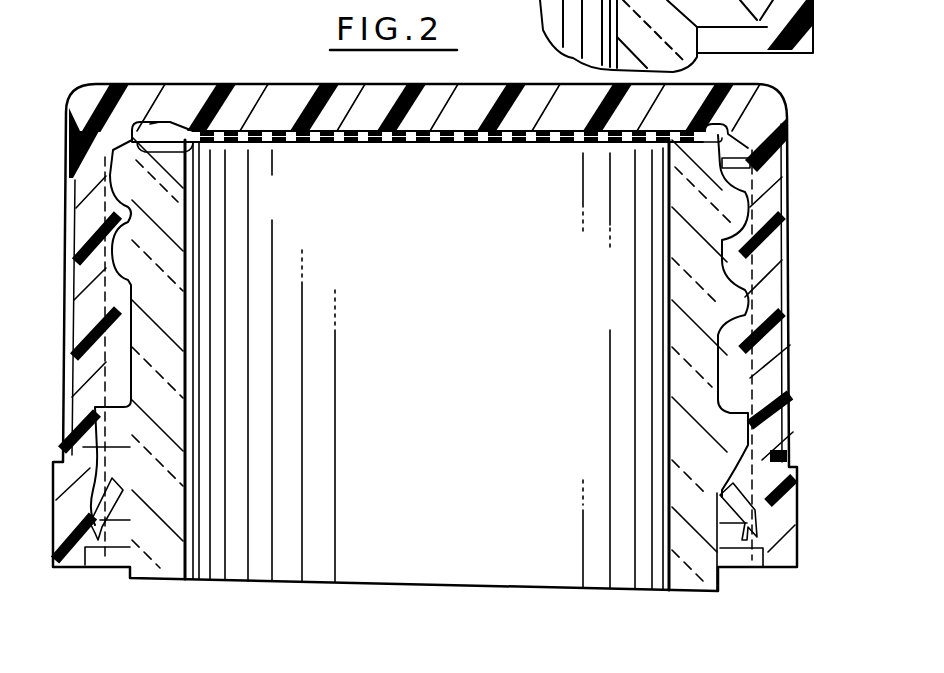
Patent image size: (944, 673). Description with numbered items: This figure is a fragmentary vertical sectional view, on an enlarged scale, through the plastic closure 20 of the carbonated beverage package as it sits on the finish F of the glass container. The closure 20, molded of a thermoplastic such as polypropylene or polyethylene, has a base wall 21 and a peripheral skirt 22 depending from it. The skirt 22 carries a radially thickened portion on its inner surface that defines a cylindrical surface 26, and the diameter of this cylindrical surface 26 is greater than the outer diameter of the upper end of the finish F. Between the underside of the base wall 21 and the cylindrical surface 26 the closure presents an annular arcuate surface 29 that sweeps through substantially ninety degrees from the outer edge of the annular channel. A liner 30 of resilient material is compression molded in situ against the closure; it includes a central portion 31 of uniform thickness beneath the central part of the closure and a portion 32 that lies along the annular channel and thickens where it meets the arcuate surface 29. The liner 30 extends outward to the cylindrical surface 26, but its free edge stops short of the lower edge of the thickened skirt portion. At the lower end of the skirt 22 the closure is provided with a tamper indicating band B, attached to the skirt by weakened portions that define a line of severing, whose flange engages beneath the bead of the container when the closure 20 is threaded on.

The plastic closure 20 is at (225, 76).
The base wall 21 is at (133, 92).
The peripheral skirt 22 is at (767, 287).
The cylindrical surface 26 is at (717, 170).
The annular arcuate surface 29 is at (727, 124).
The liner 30 is at (400, 152).
The central portion of liner 31 is at (317, 143).
The liner portion along channel 32 is at (157, 123).
The finish F is at (652, 264).
The tamper indicating band B is at (787, 515).